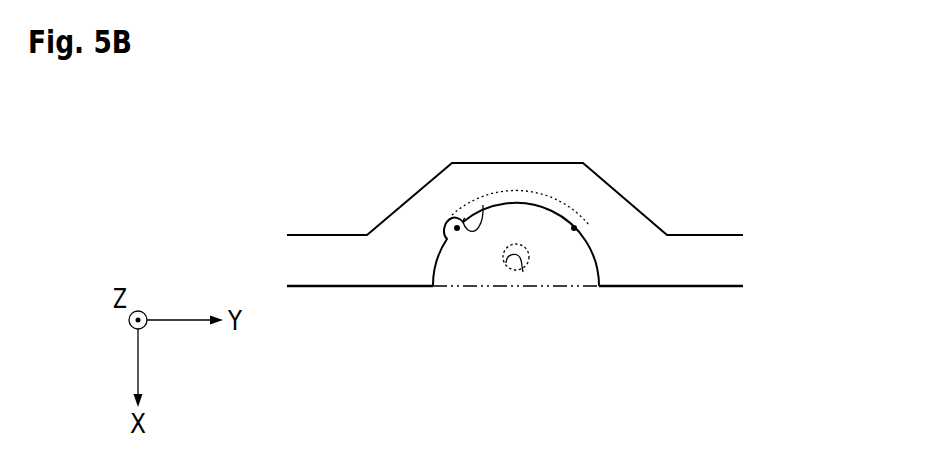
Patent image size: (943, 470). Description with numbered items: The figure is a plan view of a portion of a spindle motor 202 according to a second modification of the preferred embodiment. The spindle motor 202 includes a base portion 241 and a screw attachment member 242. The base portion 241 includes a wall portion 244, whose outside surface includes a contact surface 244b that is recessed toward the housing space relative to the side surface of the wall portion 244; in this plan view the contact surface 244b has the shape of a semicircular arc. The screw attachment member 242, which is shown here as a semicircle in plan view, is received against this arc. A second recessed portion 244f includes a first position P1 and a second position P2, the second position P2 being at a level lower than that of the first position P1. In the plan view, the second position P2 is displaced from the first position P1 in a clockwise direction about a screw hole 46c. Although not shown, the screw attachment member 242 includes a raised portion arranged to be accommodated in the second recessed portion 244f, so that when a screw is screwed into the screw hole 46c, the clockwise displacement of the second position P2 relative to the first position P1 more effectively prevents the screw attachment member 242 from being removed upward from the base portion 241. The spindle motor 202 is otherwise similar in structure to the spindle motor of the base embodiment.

The spindle motor 202 is at (733, 115).
The wall portion 244 is at (703, 258).
The base portion 241 is at (720, 296).
The screw attachment member 242 is at (463, 258).
The contact surface 244b is at (590, 262).
The second recessed portion 244f is at (483, 205).
The screw hole 46c is at (523, 272).
The first position P1 is at (457, 228).
The second position P2 is at (574, 228).